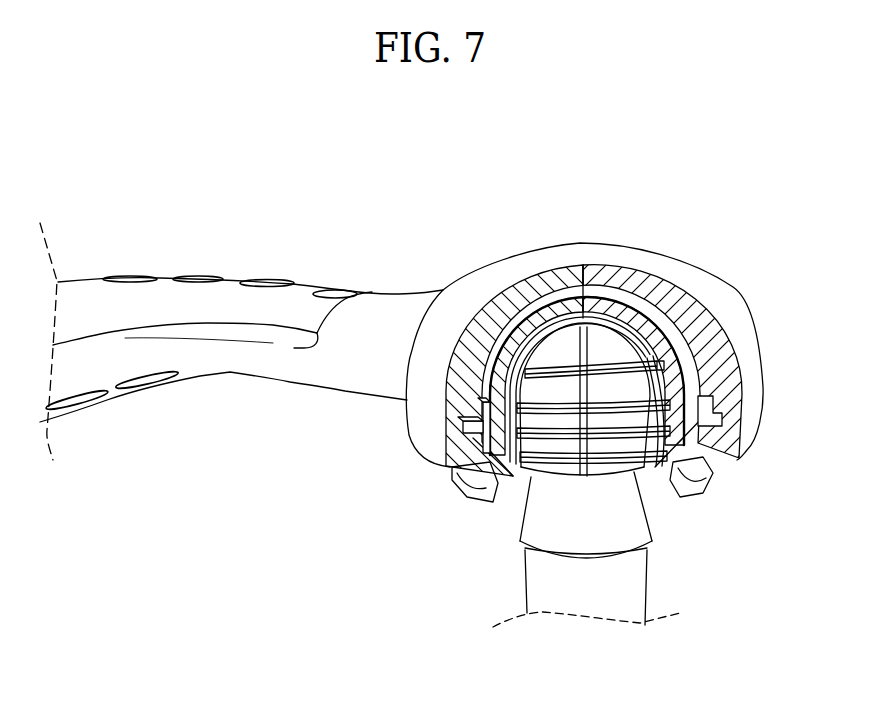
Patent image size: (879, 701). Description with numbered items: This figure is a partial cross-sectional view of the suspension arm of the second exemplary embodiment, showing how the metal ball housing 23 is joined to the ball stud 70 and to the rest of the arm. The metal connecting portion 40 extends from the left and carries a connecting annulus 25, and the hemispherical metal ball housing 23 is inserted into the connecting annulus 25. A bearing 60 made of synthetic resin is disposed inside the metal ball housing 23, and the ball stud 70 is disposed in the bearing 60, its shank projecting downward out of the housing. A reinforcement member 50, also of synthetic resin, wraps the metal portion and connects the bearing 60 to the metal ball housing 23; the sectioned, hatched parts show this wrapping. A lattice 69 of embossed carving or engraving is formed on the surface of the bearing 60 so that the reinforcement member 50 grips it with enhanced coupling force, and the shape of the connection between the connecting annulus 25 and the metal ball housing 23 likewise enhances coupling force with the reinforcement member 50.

The metal connecting portion 40 is at (162, 282).
The reinforcement member 50 is at (727, 378).
The metal ball housing 23 is at (678, 327).
The connecting annulus 25 is at (725, 420).
The lattice 69 is at (616, 370).
The bearing 60 is at (524, 482).
The ball stud 70 is at (643, 570).